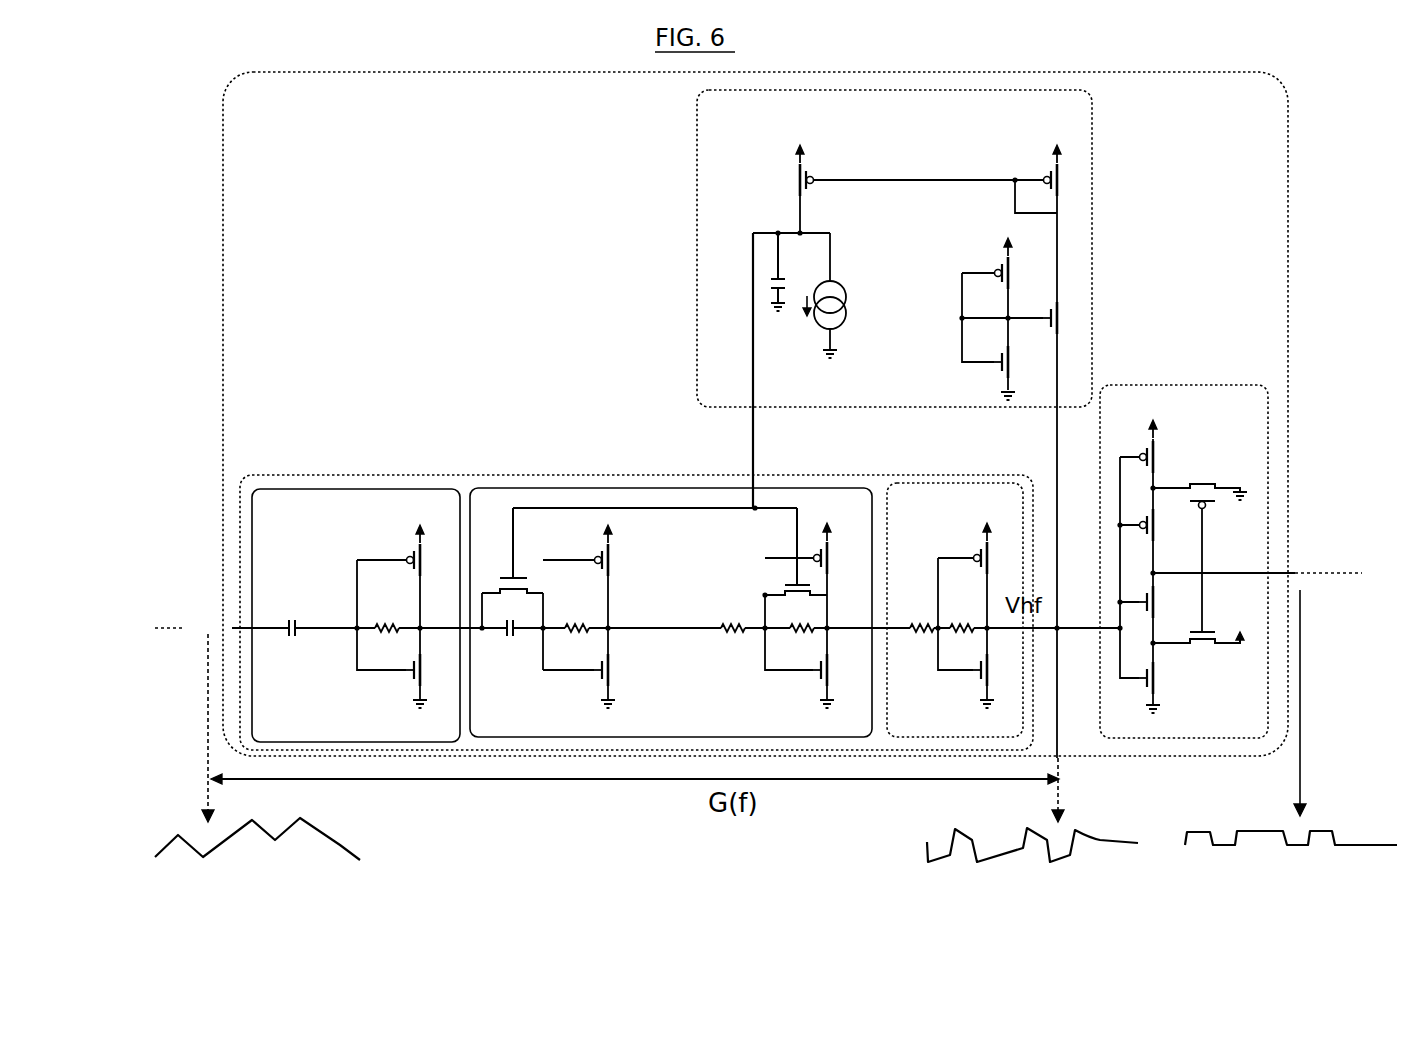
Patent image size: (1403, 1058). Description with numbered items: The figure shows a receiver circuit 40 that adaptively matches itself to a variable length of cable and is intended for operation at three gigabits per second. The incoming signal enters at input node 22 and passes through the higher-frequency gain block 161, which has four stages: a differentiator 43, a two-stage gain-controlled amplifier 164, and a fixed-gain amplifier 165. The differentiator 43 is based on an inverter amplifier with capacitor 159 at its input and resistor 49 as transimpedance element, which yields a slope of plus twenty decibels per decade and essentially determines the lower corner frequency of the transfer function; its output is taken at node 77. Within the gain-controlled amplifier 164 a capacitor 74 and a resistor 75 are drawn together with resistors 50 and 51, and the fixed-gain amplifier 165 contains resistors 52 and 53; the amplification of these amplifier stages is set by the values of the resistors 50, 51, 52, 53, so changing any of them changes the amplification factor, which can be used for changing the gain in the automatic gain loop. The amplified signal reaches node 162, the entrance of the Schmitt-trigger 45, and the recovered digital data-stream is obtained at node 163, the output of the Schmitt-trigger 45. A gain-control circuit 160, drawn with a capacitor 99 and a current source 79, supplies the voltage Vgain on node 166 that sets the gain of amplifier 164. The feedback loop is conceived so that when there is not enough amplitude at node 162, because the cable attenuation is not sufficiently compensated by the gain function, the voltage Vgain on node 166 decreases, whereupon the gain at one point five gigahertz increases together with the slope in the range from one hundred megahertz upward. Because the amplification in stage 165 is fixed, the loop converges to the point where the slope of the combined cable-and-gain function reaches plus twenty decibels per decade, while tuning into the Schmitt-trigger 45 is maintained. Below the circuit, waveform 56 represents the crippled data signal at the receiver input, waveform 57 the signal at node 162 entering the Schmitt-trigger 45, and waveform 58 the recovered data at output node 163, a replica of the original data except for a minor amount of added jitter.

The variable gain amplifier circuit 40 is at (224, 242).
The gain control circuit 160 is at (694, 275).
The capacitor 99 is at (765, 284).
The current source 79 is at (845, 325).
The Schmitt-trigger 45 is at (1170, 385).
The differentiator 43 is at (312, 489).
The higher-frequency gain block 161 is at (362, 476).
The node 166 is at (757, 424).
The two-stage gain-controlled amplifier 164 is at (822, 488).
The fixed-gain amplifier 165 is at (945, 484).
The input terminal Vin 22 is at (250, 627).
The capacitor 159 is at (294, 626).
The resistor 49 is at (386, 626).
The output node of first stage 77 is at (440, 627).
The capacitor 74 is at (510, 643).
The resistor 75 is at (572, 626).
The resistor 50 is at (743, 636).
The resistor 51 is at (810, 637).
The resistor 52 is at (913, 626).
The resistor 53 is at (953, 626).
The node 163 is at (1227, 572).
The node 162 is at (1095, 630).
The input signal waveform 56 is at (336, 848).
The high-frequency signal waveform 57 is at (1106, 838).
The output signal waveform 58 is at (1346, 838).